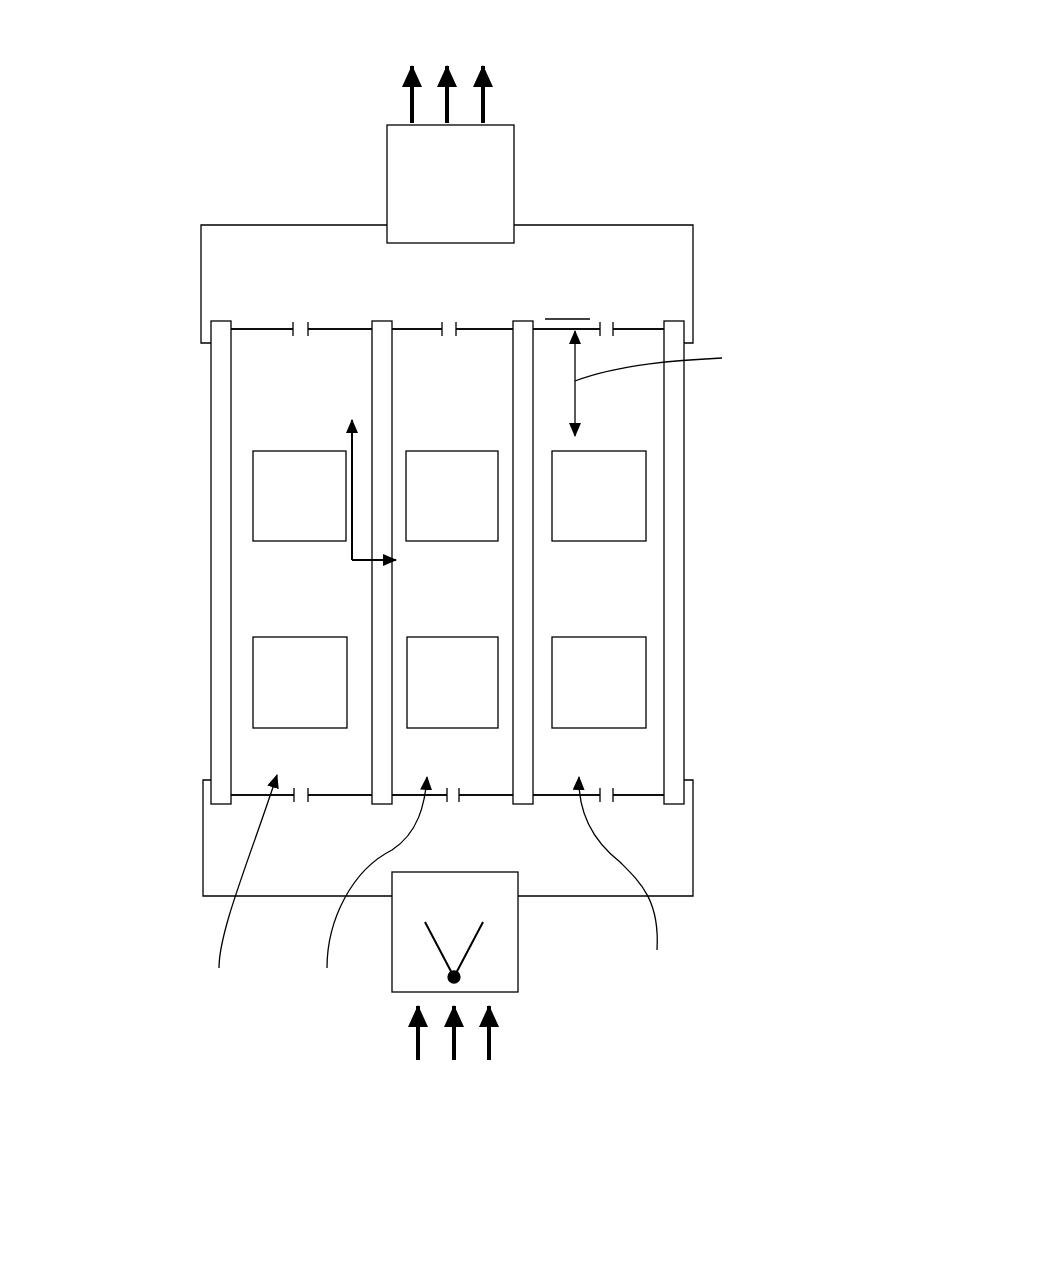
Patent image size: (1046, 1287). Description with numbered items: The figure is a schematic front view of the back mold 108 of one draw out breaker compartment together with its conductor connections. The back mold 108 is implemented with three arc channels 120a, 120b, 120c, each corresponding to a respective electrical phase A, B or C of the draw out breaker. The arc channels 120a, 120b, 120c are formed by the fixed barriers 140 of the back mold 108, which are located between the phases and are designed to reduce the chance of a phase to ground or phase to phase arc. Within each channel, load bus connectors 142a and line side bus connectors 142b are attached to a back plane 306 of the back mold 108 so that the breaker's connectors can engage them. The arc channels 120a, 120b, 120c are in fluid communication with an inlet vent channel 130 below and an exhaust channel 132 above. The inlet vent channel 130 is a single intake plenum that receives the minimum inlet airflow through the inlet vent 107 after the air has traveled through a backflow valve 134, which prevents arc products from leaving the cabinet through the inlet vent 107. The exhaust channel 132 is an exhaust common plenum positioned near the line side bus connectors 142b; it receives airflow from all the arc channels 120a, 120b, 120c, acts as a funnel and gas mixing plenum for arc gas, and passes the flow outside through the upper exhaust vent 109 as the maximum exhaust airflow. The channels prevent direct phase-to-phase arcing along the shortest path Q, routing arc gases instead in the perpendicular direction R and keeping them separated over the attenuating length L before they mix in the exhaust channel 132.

The back mold 108 is at (684, 46).
The upper exhaust vent 109 is at (514, 143).
The exhaust channel 132 is at (656, 259).
The inlet vent channel 130 is at (642, 847).
The fixed barriers 140 is at (378, 438).
The arc channel 120a is at (291, 581).
The arc channel 120b is at (443, 596).
The arc channel 120c is at (608, 590).
The load bus connectors 142a is at (324, 697).
The line side bus connectors 142b is at (323, 507).
The back plane 306 is at (431, 400).
The backflow valve 134 is at (504, 921).
The inlet vent 107 is at (504, 995).